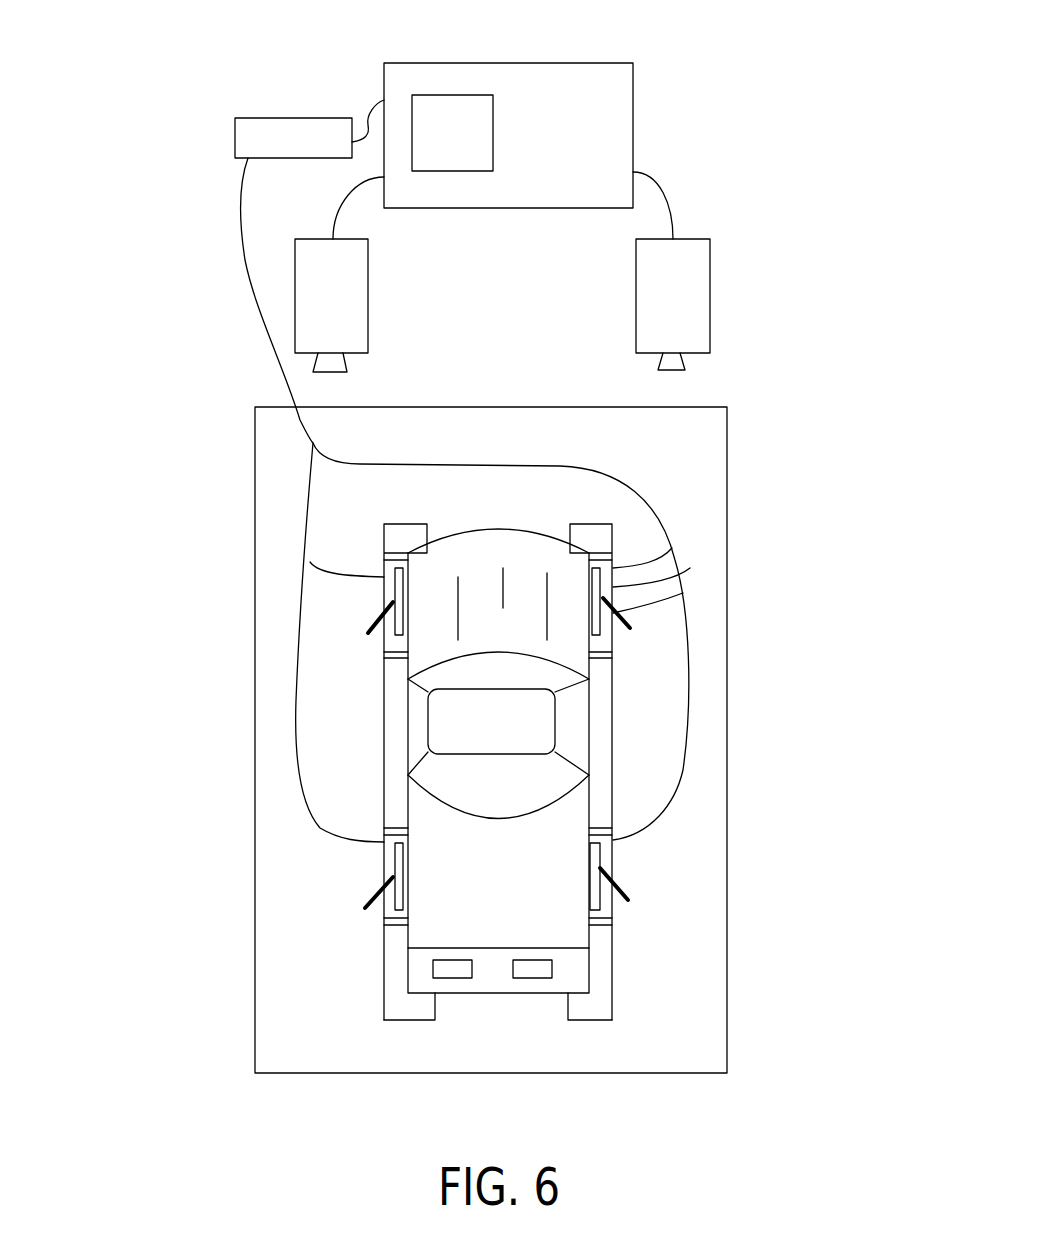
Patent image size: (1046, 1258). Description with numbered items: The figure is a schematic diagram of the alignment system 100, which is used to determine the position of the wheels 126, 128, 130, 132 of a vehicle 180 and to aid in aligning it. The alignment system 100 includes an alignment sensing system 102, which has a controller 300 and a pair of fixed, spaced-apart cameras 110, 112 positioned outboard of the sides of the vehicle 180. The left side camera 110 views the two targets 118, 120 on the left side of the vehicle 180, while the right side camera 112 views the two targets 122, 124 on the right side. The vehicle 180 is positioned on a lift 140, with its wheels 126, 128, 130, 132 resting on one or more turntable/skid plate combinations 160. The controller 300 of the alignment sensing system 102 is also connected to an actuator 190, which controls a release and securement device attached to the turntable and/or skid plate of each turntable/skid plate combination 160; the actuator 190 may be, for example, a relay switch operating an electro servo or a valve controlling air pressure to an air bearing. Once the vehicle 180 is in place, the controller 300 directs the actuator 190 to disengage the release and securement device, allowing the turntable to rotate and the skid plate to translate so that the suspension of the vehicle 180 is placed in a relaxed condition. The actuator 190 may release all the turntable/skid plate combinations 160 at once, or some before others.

The alignment system 100 is at (140, 96).
The alignment sensing system 102 is at (437, 63).
The controller 300 is at (490, 95).
The actuator 190 is at (300, 130).
The left side camera 110 is at (368, 300).
The right side camera 112 is at (711, 297).
The turntable/skid plate combination 160 is at (668, 560).
The vehicle 180 is at (408, 735).
The lift 140 is at (597, 1020).
The target 118 is at (385, 613).
The target 120 is at (390, 877).
The target 122 is at (683, 593).
The target 124 is at (615, 888).
The wheel 126 is at (395, 632).
The wheel 128 is at (395, 903).
The wheel 130 is at (603, 623).
The wheel 132 is at (613, 903).